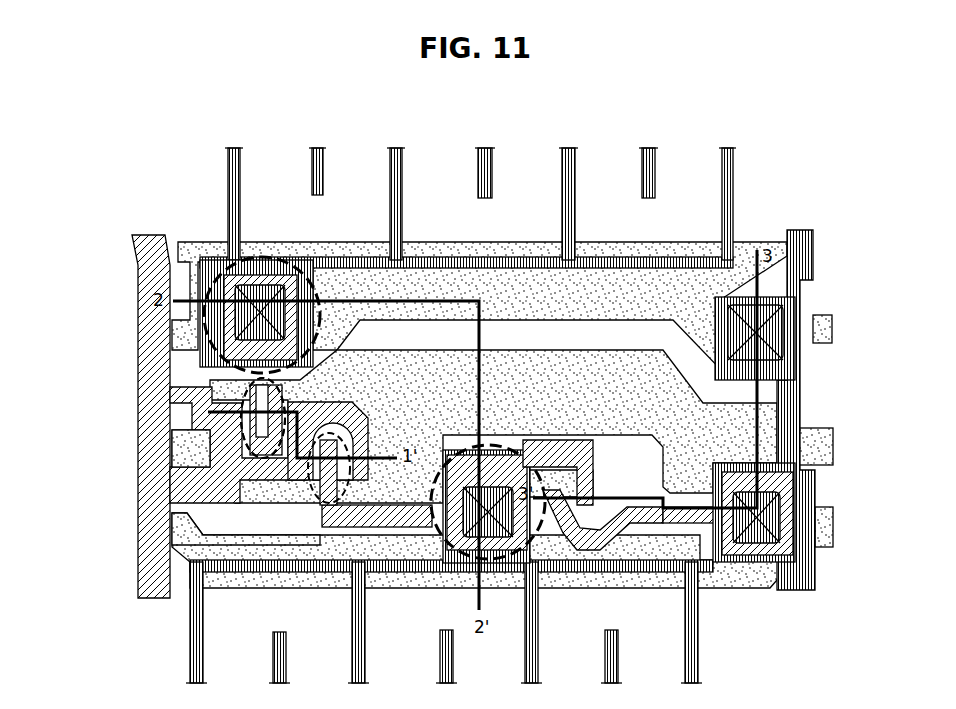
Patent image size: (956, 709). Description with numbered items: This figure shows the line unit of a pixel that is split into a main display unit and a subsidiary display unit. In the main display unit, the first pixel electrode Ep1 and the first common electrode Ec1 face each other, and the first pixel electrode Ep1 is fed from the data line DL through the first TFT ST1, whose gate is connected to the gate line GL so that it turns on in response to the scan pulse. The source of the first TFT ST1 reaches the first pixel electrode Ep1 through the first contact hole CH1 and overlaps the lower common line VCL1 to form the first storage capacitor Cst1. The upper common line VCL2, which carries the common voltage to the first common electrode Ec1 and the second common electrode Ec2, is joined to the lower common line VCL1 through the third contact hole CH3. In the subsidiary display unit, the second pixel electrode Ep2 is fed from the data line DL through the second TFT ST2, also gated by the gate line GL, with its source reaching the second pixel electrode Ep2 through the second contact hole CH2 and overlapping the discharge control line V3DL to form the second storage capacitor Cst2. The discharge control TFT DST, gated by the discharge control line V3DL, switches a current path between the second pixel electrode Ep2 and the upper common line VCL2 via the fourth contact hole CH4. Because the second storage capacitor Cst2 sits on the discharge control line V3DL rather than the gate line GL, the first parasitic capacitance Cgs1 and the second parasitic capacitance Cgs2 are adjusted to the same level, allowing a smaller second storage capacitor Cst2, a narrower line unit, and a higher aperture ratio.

The first pixel electrode Ep1 is at (735, 180).
The first common electrode Ec1 is at (656, 172).
The second pixel electrode Ep2 is at (699, 630).
The second common electrode Ec2 is at (619, 658).
The lower common line VCL1 is at (178, 333).
The upper common line VCL2 is at (814, 244).
The gate line GL is at (180, 447).
The data line DL is at (165, 490).
The discharge control line V3DL is at (180, 530).
The first TFT ST1 is at (285, 388).
The second TFT ST2 is at (368, 408).
The discharge control TFT DST is at (584, 531).
The first contact hole CH1 is at (261, 288).
The second contact hole CH2 is at (488, 545).
The third contact hole CH3 is at (790, 330).
The fourth contact hole CH4 is at (775, 516).
The first storage capacitor Cst1 is at (306, 266).
The second storage capacitor Cst2 is at (432, 524).
The first parasitic capacitance Cgs1 is at (261, 458).
The second parasitic capacitance Cgs2 is at (321, 503).